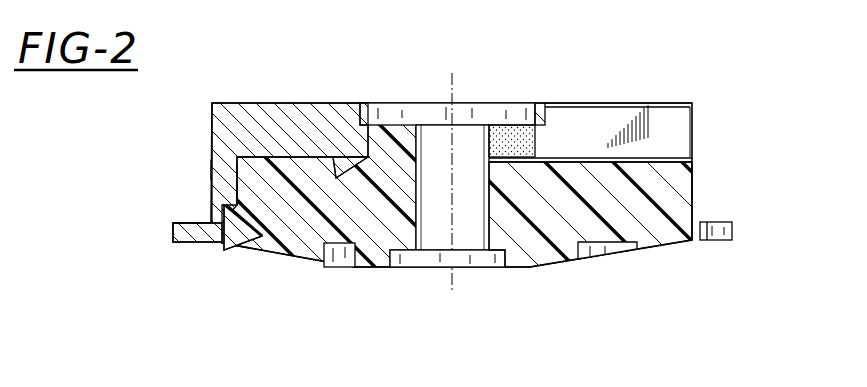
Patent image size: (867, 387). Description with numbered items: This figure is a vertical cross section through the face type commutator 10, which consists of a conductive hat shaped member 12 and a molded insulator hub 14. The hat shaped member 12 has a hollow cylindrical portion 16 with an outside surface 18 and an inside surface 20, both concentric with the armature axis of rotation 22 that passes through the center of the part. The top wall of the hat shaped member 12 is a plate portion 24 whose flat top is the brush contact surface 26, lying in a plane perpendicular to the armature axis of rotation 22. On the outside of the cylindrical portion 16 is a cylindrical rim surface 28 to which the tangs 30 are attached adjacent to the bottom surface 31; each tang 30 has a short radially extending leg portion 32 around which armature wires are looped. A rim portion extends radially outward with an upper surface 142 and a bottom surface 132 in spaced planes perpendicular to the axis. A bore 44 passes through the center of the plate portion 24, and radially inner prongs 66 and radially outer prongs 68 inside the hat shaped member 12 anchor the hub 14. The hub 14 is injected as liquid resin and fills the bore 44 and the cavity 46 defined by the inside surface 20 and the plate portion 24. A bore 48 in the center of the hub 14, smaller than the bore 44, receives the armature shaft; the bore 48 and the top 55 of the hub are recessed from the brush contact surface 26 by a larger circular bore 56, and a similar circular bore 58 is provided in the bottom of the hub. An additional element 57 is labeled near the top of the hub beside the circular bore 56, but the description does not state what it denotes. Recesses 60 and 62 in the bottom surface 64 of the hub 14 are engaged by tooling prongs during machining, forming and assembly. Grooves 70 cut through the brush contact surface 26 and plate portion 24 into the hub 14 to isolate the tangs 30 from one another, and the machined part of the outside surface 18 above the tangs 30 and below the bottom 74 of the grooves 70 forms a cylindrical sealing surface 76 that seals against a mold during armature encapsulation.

The commutator 10 is at (285, 270).
The hat shaped member 12 is at (212, 108).
The insulator hub 14 is at (311, 252).
The cylindrical portion 16 is at (212, 152).
The outside surface 18 is at (212, 167).
The inside surface 20 is at (233, 161).
The armature axis of rotation 22 is at (453, 94).
The plate portion 24 is at (247, 112).
The brush contact surface 26 is at (668, 103).
The cylindrical rim surface 28 is at (703, 241).
The tang 30 is at (738, 229).
The bottom surface 31 is at (253, 228).
The leg portion 32 is at (701, 222).
The bore 44 is at (517, 127).
The cavity 46 is at (291, 194).
The bore 48 is at (489, 225).
The top of the hub 55 is at (410, 122).
The circular bore 56 is at (366, 118).
The spacer 57 is at (540, 104).
The circular bore 58 is at (428, 268).
The recess 60 is at (342, 268).
The recess 62 is at (621, 255).
The bottom surface of the hub 64 is at (546, 266).
The radially inner prongs 66 is at (334, 160).
The radially outer prongs 68 is at (220, 247).
The groove 70 is at (692, 118).
The bottom of the grooves 74 is at (670, 157).
The cylindrical sealing surface 76 is at (693, 173).
The bottom surface 132 is at (193, 242).
The upper surface 142 is at (190, 223).